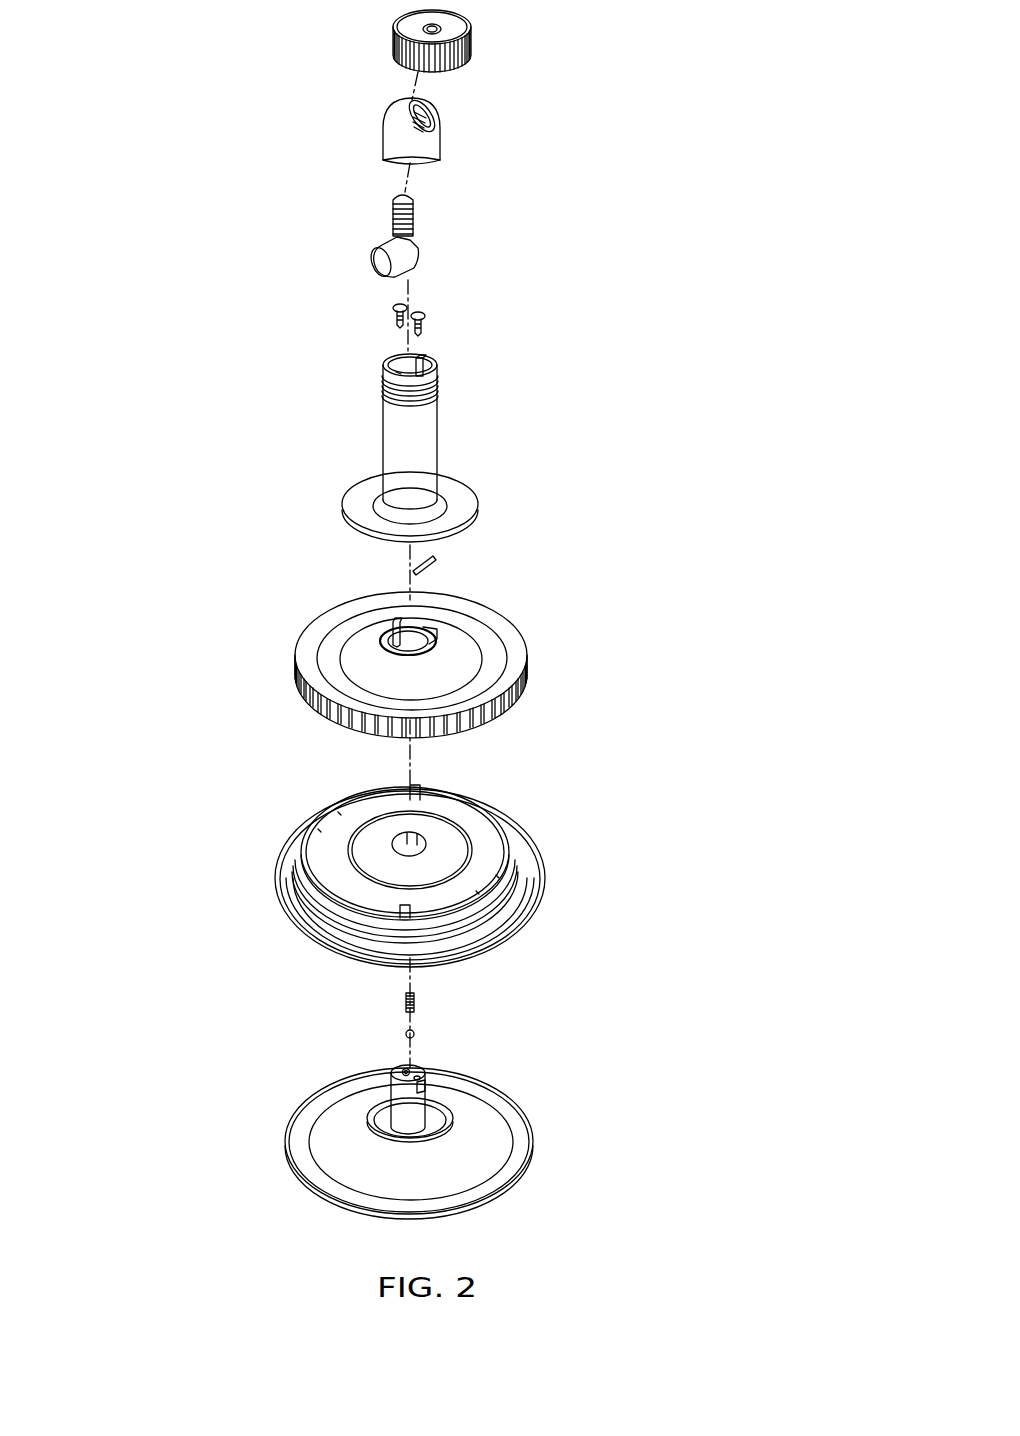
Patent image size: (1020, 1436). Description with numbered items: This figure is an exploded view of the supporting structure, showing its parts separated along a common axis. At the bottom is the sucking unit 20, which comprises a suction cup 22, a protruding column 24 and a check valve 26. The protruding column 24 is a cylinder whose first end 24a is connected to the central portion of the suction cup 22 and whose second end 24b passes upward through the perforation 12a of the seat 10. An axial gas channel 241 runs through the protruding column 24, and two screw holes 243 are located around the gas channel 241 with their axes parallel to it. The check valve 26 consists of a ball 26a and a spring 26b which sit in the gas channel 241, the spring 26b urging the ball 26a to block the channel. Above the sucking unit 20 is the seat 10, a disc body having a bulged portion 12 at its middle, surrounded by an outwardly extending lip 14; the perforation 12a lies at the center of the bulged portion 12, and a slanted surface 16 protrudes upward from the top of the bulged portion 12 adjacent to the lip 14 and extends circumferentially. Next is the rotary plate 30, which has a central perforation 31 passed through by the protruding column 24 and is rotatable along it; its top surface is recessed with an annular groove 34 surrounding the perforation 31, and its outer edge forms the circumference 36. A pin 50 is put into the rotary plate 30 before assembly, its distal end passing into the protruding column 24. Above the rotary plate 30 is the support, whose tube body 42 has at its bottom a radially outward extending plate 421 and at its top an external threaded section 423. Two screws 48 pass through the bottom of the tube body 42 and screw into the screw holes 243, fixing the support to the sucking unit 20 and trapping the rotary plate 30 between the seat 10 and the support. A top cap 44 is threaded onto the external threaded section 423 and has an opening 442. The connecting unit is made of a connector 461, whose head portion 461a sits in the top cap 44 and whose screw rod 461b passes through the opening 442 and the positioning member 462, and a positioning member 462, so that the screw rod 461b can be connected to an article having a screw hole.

The seat 10 is at (358, 862).
The bulged portion 12 is at (340, 868).
The perforation 12a is at (420, 840).
The lip 14 is at (285, 898).
The slanted surface 16 is at (355, 800).
The sucking unit 20 is at (356, 1098).
The suction cup 22 is at (480, 1163).
The protruding column 24 is at (404, 1077).
The first end 24a is at (395, 1122).
The second end 24b is at (425, 1092).
The gas channel 241 is at (404, 1069).
The screw holes 243 is at (396, 1071).
The check valve 26 is at (528, 996).
The ball 26a is at (416, 1034).
The spring 26b is at (416, 1000).
The rotary plate 30 is at (420, 640).
The perforation 31 is at (397, 628).
The annular groove 34 is at (382, 643).
The circumference 36 is at (305, 706).
The tube body 42 is at (440, 435).
The extending plate 421 is at (360, 500).
The external threaded section 423 is at (384, 372).
The top cap 44 is at (384, 120).
The opening 442 is at (432, 113).
The connector 461 is at (298, 228).
The head portion 461a is at (378, 255).
The screw rod 461b is at (395, 210).
The positioning member 462 is at (393, 31).
The screws 48 is at (394, 307).
The pin 50 is at (440, 572).